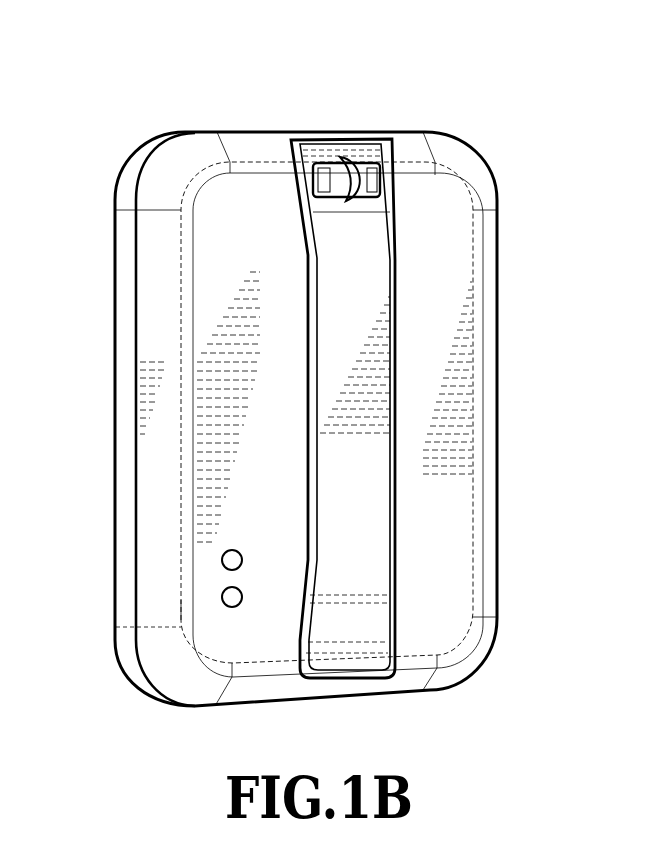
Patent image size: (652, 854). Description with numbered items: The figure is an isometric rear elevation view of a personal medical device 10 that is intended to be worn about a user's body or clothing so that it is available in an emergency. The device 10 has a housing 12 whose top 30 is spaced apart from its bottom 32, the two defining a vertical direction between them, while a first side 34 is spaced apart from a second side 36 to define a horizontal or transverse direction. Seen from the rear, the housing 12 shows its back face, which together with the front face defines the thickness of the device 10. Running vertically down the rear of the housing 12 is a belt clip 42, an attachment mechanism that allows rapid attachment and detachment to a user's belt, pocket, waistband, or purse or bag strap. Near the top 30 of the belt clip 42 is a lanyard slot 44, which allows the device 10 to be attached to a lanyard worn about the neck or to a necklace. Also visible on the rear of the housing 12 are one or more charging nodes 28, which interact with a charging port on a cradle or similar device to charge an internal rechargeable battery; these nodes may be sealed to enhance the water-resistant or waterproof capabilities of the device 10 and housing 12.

The personal medical device 10 is at (323, 395).
The housing 12 is at (422, 218).
The charging nodes 28 is at (228, 560).
The top 30 is at (256, 128).
The bottom 32 is at (390, 702).
The first side 34 is at (502, 353).
The second side 36 is at (124, 405).
The belt clip 42 is at (385, 476).
The lanyard slot 44 is at (333, 180).